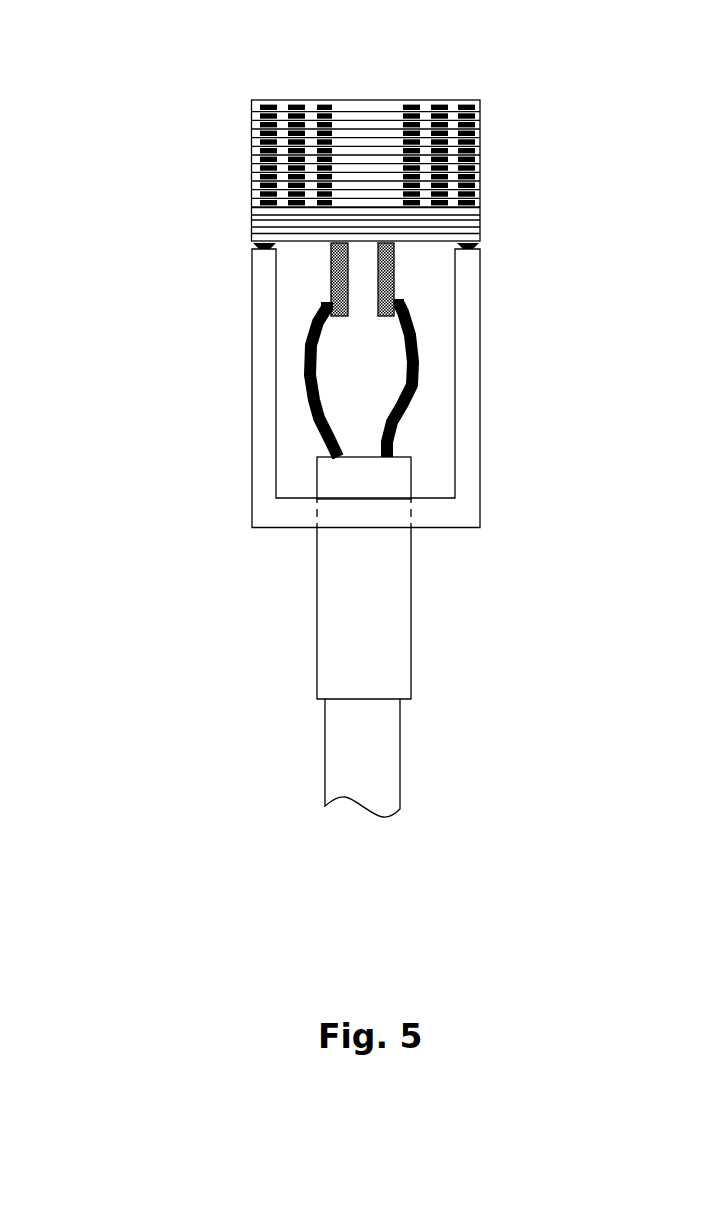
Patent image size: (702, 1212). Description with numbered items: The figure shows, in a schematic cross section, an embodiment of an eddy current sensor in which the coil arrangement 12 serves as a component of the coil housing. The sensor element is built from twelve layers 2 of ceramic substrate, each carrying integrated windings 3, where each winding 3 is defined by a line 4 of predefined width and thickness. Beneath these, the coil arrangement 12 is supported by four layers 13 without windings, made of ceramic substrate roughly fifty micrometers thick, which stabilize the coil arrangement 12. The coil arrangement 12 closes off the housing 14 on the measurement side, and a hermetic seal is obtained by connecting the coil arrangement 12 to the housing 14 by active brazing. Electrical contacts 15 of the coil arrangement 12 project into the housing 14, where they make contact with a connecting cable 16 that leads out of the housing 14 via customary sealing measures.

The layer 2 is at (478, 105).
The winding 3 is at (325, 102).
The line 4 is at (437, 103).
The coil arrangement 12 is at (232, 133).
The layer without windings 13 is at (257, 220).
The housing 14 is at (468, 408).
The electrical contact 15 is at (331, 270).
The connecting cable 16 is at (316, 433).